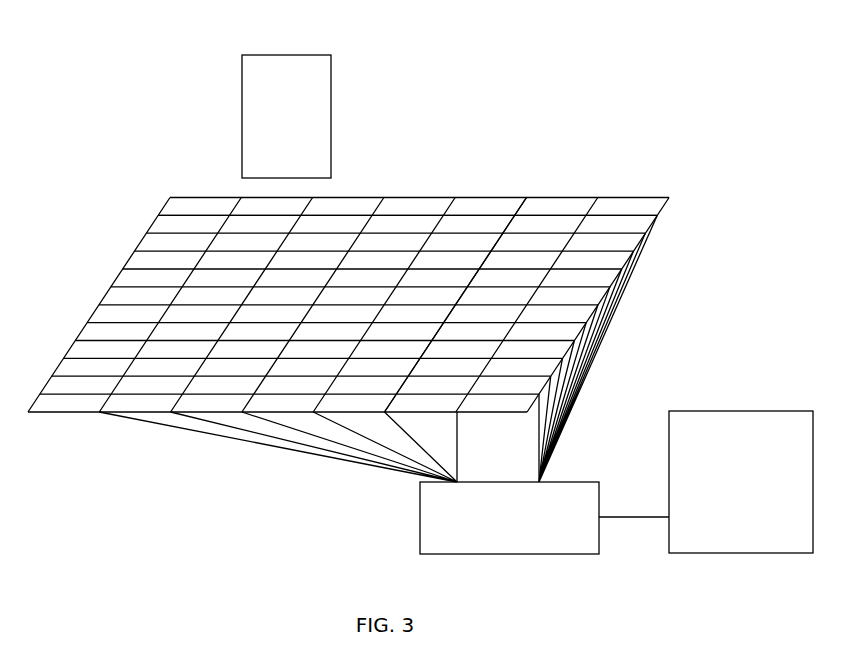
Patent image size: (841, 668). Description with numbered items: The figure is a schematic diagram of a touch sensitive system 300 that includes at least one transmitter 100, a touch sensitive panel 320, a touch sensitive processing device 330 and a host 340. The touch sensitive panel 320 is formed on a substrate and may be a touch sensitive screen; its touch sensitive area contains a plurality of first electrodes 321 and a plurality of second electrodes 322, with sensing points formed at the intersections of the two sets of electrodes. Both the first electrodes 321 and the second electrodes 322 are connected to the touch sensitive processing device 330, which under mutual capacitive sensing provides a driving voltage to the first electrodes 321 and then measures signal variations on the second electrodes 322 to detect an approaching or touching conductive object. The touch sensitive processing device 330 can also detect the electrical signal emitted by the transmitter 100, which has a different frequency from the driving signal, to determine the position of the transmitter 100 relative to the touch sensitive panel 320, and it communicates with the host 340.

The touch sensitive system 300 is at (105, 78).
The transmitter 100 is at (286, 116).
The touch sensitive panel 320 is at (402, 198).
The first electrodes 321 is at (527, 198).
The second electrodes 322 is at (634, 212).
The touch sensitive processing device 330 is at (384, 384).
The host 340 is at (741, 482).